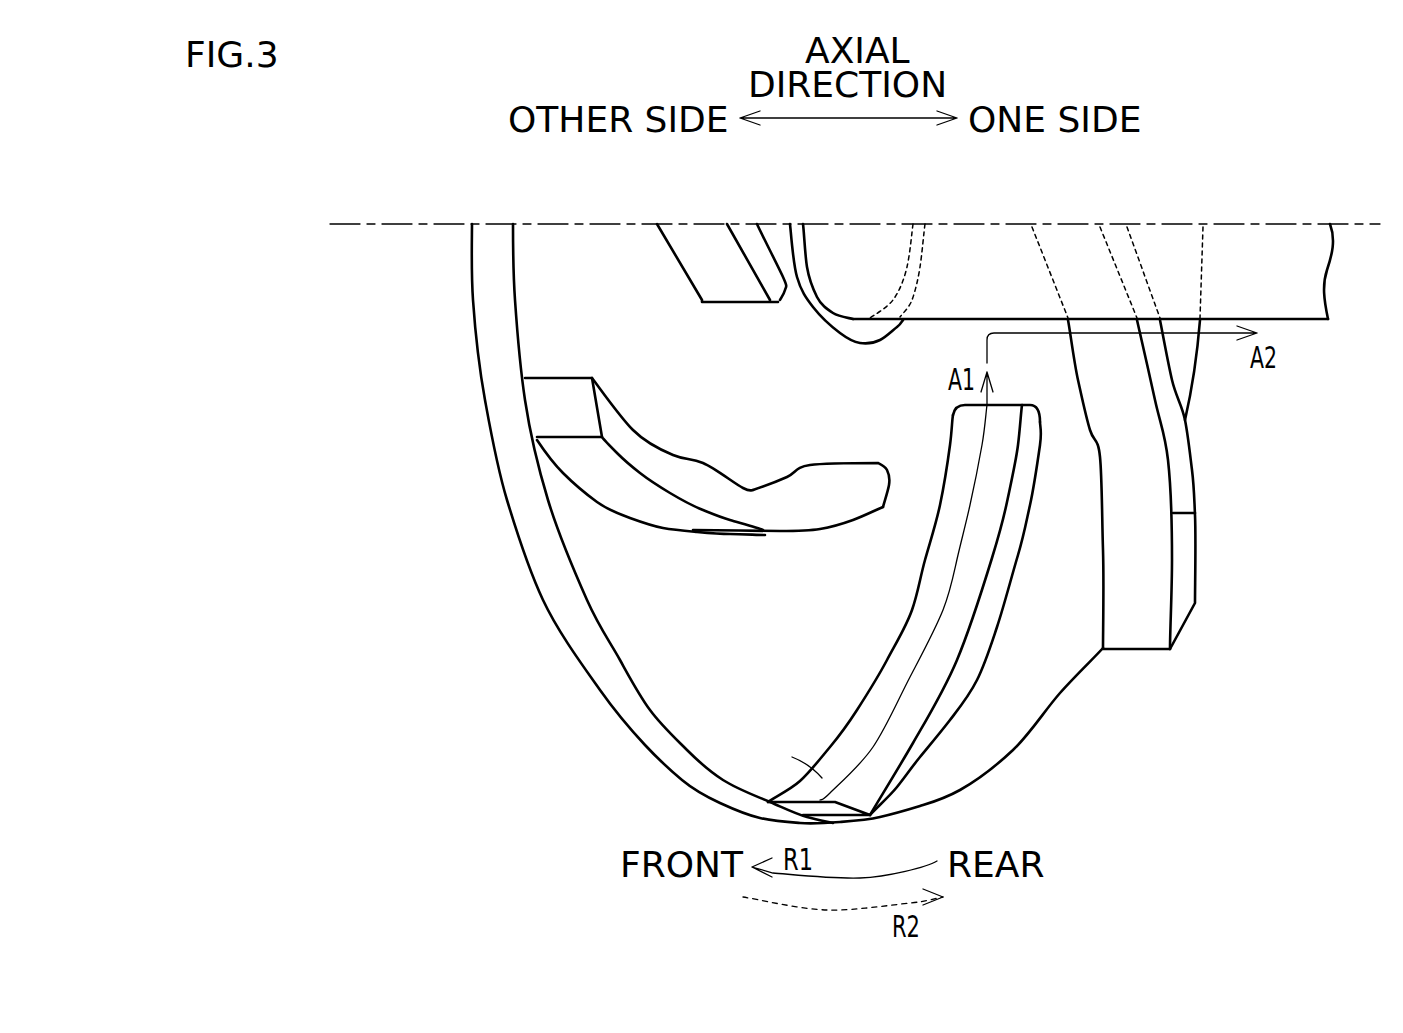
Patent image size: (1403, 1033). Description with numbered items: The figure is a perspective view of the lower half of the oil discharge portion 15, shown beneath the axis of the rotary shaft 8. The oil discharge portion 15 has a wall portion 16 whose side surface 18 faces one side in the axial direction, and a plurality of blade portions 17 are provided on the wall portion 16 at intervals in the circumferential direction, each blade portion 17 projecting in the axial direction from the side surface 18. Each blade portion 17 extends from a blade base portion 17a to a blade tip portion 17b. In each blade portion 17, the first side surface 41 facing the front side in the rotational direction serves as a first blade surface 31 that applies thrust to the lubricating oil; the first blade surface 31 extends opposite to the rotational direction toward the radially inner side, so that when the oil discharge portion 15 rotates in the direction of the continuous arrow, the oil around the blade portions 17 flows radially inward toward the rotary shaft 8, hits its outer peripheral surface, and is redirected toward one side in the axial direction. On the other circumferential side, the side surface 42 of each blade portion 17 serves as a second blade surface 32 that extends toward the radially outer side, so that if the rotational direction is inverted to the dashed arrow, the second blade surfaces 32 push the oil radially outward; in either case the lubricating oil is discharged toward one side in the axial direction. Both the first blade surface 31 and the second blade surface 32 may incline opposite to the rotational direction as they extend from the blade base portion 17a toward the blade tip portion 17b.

The rotary shaft 8 is at (1293, 322).
The oil discharge portion 15 is at (463, 525).
The wall portion 16 is at (784, 523).
The blade portion 17 is at (753, 252).
The blade base portion 17a is at (672, 530).
The blade tip portion 17b is at (708, 512).
The side surface 18 is at (693, 658).
The first blade surface 31 is at (946, 567).
The second blade surface 32 is at (953, 516).
The first side surface 41 is at (1128, 580).
The side surface 42 is at (687, 250).